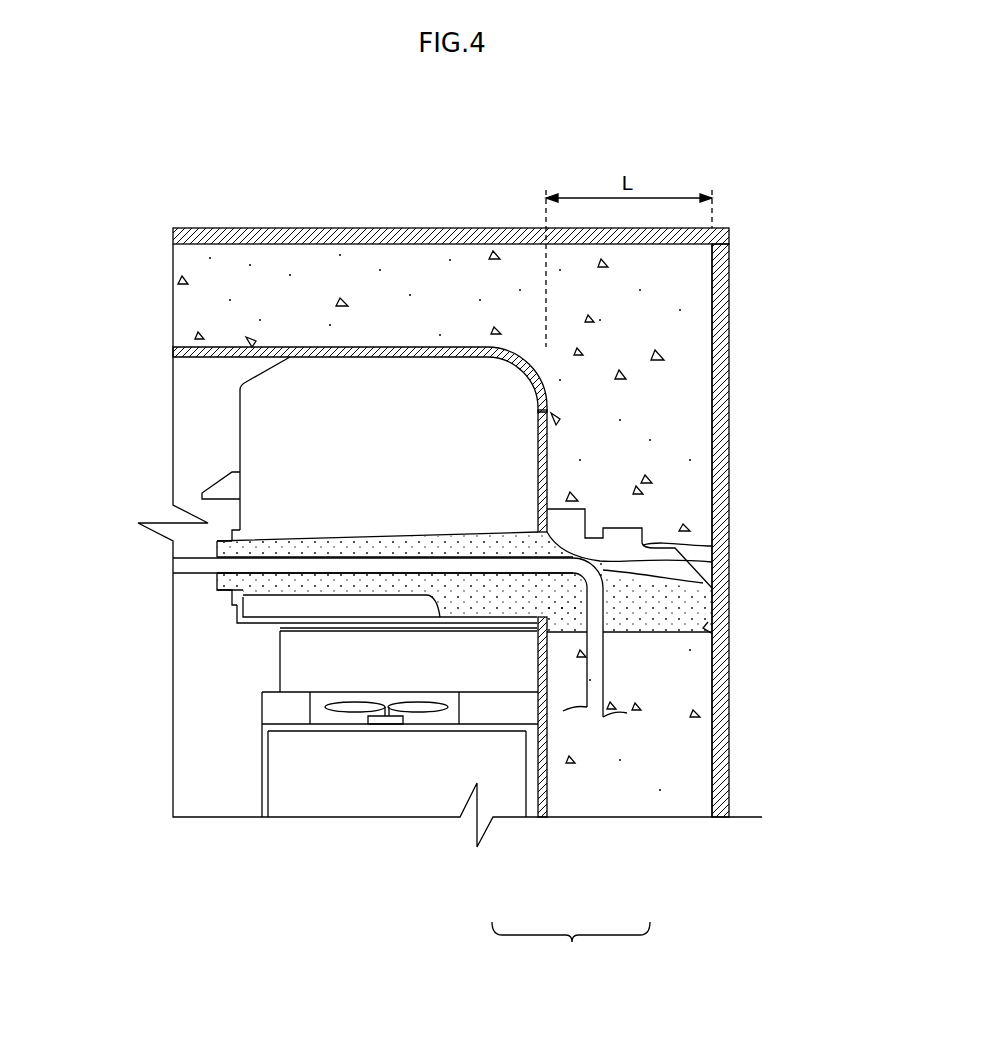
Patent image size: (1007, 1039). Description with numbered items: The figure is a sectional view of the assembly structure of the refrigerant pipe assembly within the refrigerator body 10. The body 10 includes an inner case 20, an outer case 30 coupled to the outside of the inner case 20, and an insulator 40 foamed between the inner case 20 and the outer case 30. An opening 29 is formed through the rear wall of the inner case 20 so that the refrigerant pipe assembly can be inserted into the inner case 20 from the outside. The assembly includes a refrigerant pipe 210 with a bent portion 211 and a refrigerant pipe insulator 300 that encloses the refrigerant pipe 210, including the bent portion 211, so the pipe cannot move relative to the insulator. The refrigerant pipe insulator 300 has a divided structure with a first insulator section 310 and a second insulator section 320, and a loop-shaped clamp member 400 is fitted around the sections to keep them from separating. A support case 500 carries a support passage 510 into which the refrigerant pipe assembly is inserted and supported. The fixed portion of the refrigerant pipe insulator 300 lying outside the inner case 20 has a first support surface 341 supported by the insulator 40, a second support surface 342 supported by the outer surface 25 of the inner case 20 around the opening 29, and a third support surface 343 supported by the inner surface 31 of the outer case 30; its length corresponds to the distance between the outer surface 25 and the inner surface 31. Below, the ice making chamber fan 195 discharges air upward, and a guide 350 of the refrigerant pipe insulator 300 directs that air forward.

The body 10 is at (733, 200).
The inner case 20 is at (533, 357).
The outer surface 25 is at (547, 443).
The opening 29 is at (712, 562).
The outer case 30 is at (733, 405).
The inner surface 31 is at (704, 475).
The insulator 40 is at (688, 329).
The ice making chamber fan 195 is at (348, 709).
The refrigerant pipe 210 is at (192, 567).
The bent portion 211 is at (703, 583).
The refrigerant pipe insulator 300 is at (571, 946).
The first insulator section 310 is at (500, 602).
The second insulator section 320 is at (658, 608).
The first support surface 341 is at (712, 546).
The second support surface 342 is at (552, 510).
The third support surface 343 is at (713, 634).
The guide 350 is at (330, 606).
The clamp member 400 is at (220, 592).
The support case 500 is at (389, 380).
The support passage 510 is at (291, 537).